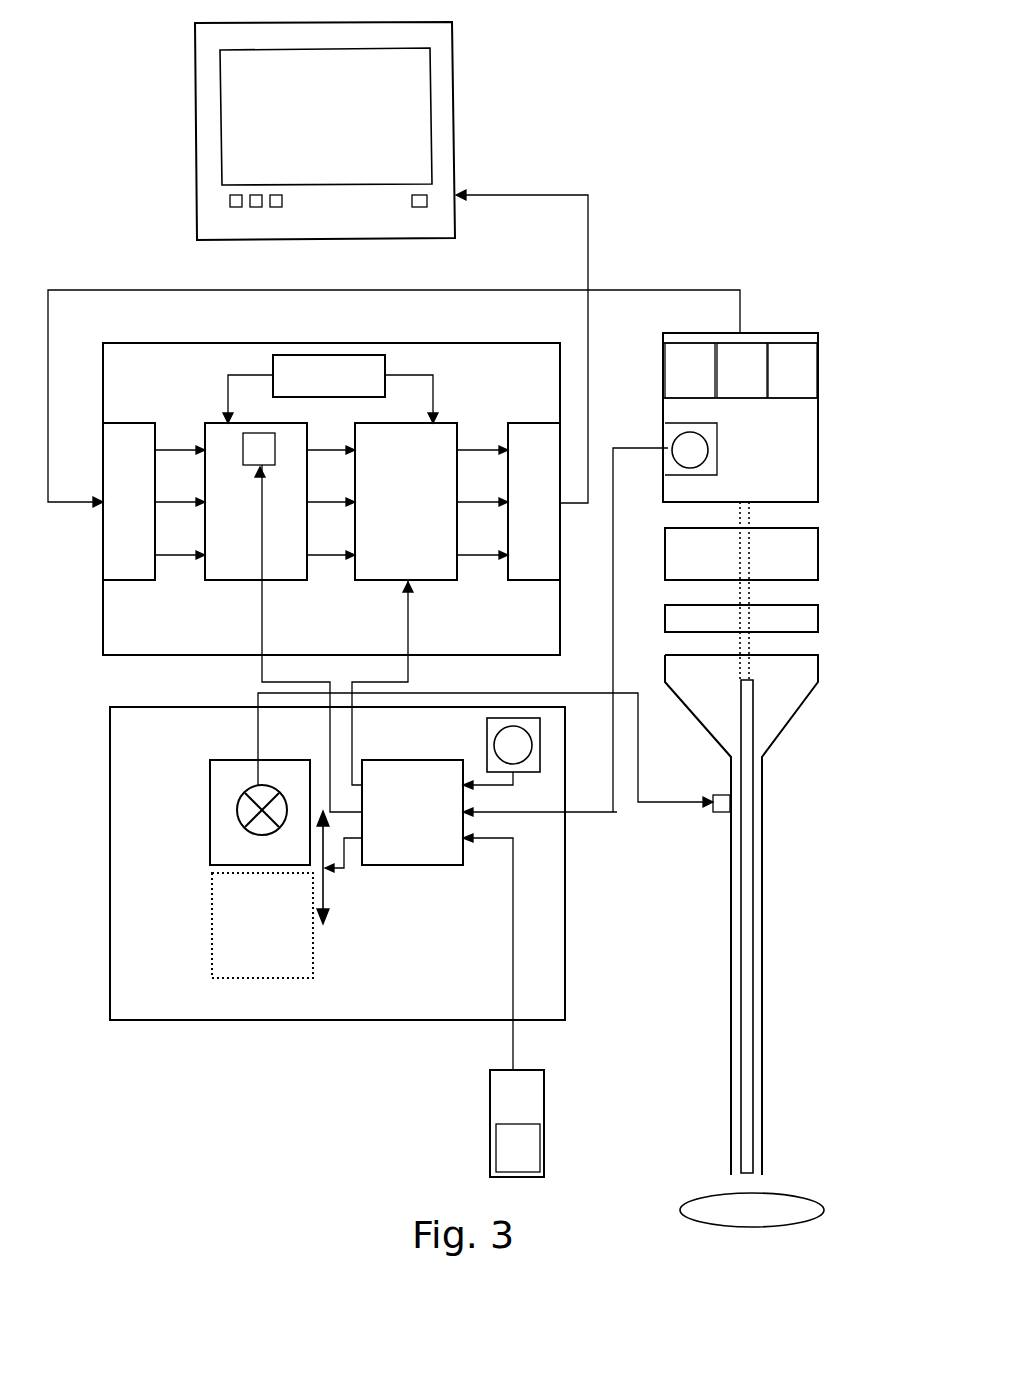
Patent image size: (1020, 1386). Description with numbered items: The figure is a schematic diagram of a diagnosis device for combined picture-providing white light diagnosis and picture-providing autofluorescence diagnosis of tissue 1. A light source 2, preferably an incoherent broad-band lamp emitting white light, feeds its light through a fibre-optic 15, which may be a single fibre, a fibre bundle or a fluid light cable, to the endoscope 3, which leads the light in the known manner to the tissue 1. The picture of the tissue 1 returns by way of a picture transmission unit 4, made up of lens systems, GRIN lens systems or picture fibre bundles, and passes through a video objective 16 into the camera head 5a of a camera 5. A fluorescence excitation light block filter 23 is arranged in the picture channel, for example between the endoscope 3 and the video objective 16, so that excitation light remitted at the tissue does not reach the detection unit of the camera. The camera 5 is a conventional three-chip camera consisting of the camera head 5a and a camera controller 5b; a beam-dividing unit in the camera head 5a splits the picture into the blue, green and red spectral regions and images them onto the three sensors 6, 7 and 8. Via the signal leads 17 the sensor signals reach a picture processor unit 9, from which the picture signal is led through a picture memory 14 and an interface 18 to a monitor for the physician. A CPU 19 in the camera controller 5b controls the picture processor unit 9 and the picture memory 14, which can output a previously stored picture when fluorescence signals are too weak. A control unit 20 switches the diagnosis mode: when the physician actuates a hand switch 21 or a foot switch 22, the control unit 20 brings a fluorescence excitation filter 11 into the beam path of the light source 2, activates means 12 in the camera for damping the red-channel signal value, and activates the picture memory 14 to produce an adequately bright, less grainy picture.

The tissue 1 is at (823, 1212).
The light source 2 is at (237, 800).
The endoscope 3 is at (822, 678).
The picture transmission unit 4 is at (755, 1028).
The camera 5 is at (662, 357).
The camera head 5a is at (822, 470).
The camera controller 5b is at (562, 378).
The sensor 6 is at (702, 345).
The sensor 7 is at (750, 345).
The sensor 8 is at (802, 345).
The picture processor unit 9 is at (203, 578).
The fluorescence excitation filter 11 is at (210, 830).
The means for damping the signal value in the red channel 12 is at (257, 433).
The picture memory 14 is at (457, 423).
The fibre-optic 15 is at (258, 693).
The video objective 16 is at (822, 557).
The signal leads 17 is at (93, 290).
The interface 18 is at (540, 422).
The CPU 19 is at (288, 353).
The control unit 20 is at (412, 865).
The hand switch 21 is at (717, 457).
The foot switch 22 is at (543, 1138).
The fluorescence excitation light block filter 23 is at (822, 623).